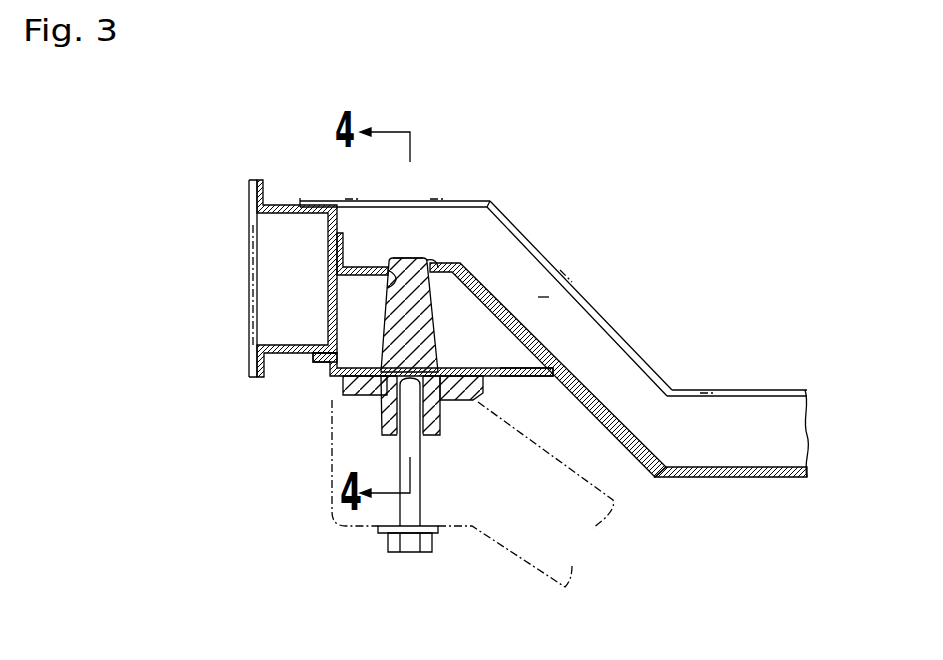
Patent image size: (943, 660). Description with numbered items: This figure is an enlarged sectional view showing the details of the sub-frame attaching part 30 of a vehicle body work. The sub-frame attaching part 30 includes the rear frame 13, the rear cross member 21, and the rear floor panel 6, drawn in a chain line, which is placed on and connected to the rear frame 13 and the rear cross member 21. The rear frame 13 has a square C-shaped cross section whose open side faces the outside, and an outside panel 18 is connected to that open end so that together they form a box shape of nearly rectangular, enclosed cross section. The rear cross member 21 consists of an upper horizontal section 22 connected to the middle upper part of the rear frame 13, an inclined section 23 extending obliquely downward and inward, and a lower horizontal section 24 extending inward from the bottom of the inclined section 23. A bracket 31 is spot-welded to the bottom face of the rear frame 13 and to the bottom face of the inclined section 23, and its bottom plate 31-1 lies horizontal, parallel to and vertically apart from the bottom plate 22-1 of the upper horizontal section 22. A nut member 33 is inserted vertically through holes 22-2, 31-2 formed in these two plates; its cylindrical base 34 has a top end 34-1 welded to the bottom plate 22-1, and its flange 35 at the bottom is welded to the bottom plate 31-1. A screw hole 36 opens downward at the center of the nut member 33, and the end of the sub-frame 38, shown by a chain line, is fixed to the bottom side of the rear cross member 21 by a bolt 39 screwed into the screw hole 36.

The rear floor panel 6 is at (490, 200).
The rear frame 13 is at (277, 207).
The outside panel 18 is at (248, 278).
The rear cross member 21 is at (593, 326).
The upper horizontal section 22 is at (445, 222).
The bottom plate 22-1 is at (470, 250).
The hole 22-2 is at (388, 281).
The inclined section 23 is at (543, 296).
The lower horizontal section 24 is at (738, 416).
The sub-frame attaching part 30 is at (254, 488).
The bracket 31 is at (540, 382).
The bottom plate 31-1 is at (527, 365).
The hole 31-2 is at (386, 366).
The nut member 33 is at (361, 399).
The cylindrical base 34 is at (410, 320).
The top end 34-1 is at (410, 262).
The flange 35 is at (462, 376).
The screw hole 36 is at (413, 410).
The sub-frame 38 is at (361, 528).
The bolt 39 is at (403, 552).